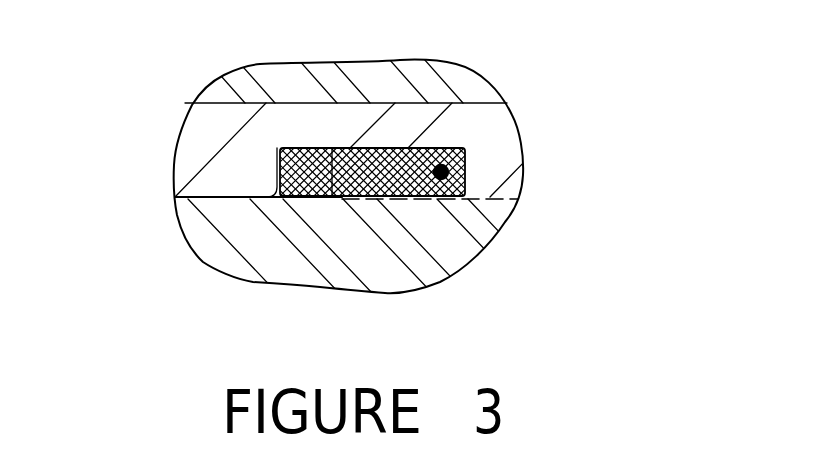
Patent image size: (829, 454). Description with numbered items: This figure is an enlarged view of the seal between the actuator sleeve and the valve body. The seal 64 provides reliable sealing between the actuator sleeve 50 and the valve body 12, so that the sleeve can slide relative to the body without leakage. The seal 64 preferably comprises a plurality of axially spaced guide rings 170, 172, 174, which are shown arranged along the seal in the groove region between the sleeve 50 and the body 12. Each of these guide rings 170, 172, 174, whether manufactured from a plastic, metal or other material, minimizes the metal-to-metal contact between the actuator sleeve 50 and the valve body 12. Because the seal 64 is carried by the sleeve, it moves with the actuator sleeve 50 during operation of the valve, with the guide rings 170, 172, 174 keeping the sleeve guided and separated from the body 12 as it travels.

The valve body 12 is at (430, 207).
The actuator sleeve 50 is at (454, 156).
The seal 64 is at (408, 98).
The guide ring 170 is at (570, 230).
The guide ring 172 is at (277, 263).
The guide ring 174 is at (172, 123).